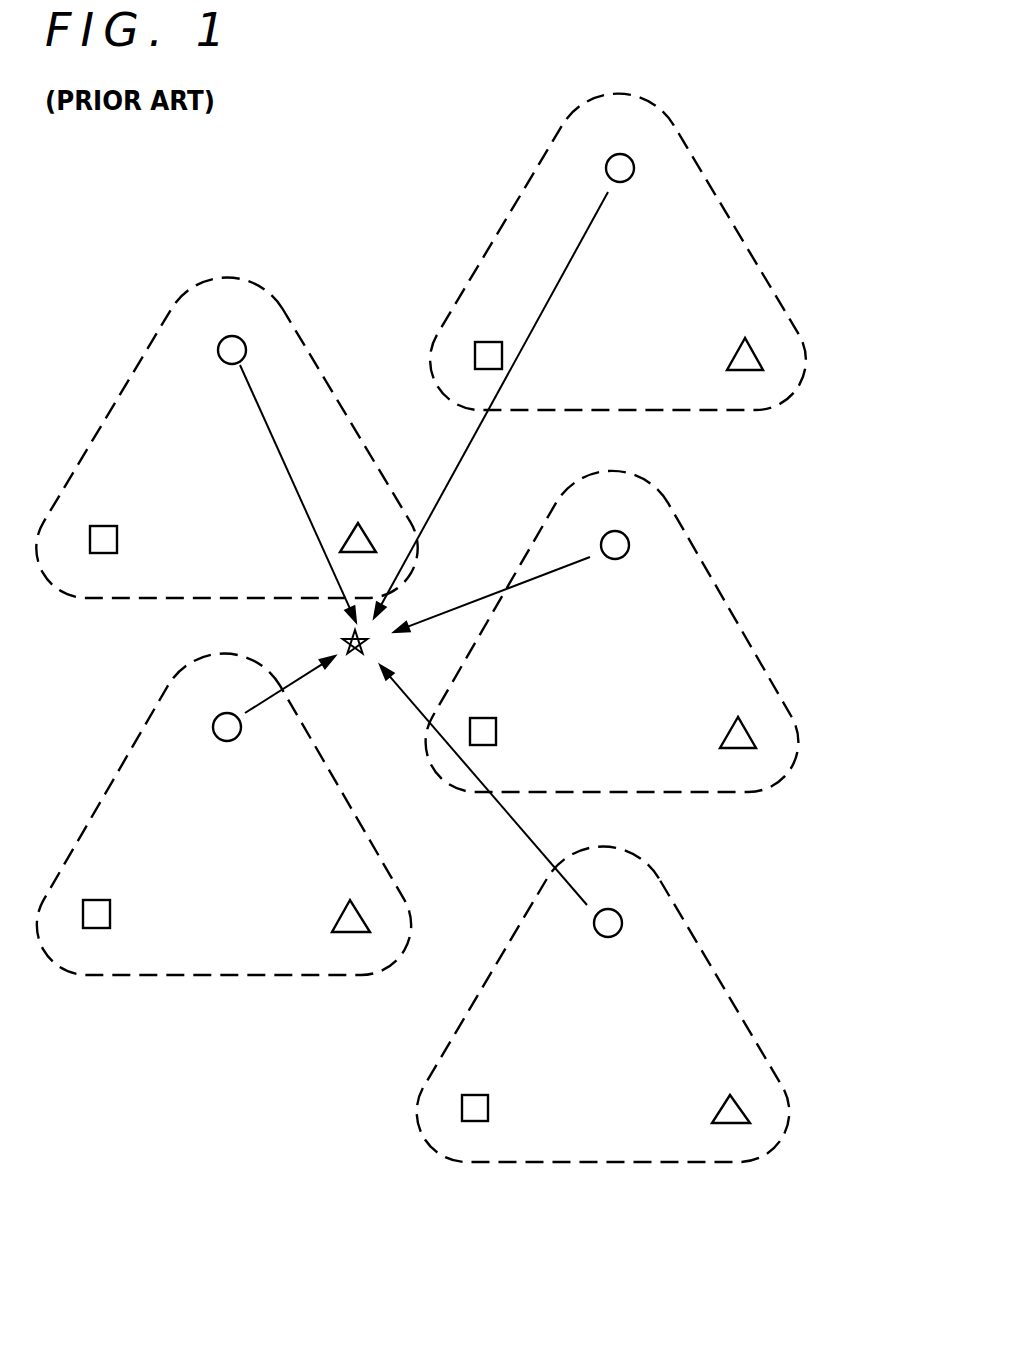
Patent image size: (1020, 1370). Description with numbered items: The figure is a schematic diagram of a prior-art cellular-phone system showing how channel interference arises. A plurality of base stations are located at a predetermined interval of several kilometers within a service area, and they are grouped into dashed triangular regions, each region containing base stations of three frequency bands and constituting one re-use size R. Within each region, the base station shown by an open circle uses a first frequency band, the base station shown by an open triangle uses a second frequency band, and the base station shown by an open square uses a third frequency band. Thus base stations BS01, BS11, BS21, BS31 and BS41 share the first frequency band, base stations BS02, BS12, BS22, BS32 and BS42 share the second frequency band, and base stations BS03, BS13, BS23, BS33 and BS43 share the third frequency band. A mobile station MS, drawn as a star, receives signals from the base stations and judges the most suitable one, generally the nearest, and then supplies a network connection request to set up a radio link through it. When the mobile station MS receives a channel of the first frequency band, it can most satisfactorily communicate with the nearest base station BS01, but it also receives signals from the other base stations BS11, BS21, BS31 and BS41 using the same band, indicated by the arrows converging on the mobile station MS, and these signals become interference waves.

The re-use size R is at (220, 290).
The mobile station MS is at (355, 660).
The base station BS01 is at (216, 718).
The base station BS02 is at (357, 906).
The base station BS03 is at (98, 900).
The base station BS11 is at (245, 340).
The base station BS12 is at (359, 523).
The base station BS13 is at (118, 540).
The base station BS21 is at (630, 543).
The base station BS22 is at (746, 715).
The base station BS23 is at (497, 731).
The base station BS31 is at (635, 168).
The base station BS32 is at (748, 337).
The base station BS33 is at (486, 342).
The base station BS41 is at (623, 923).
The base station BS42 is at (730, 1124).
The base station BS43 is at (489, 1107).